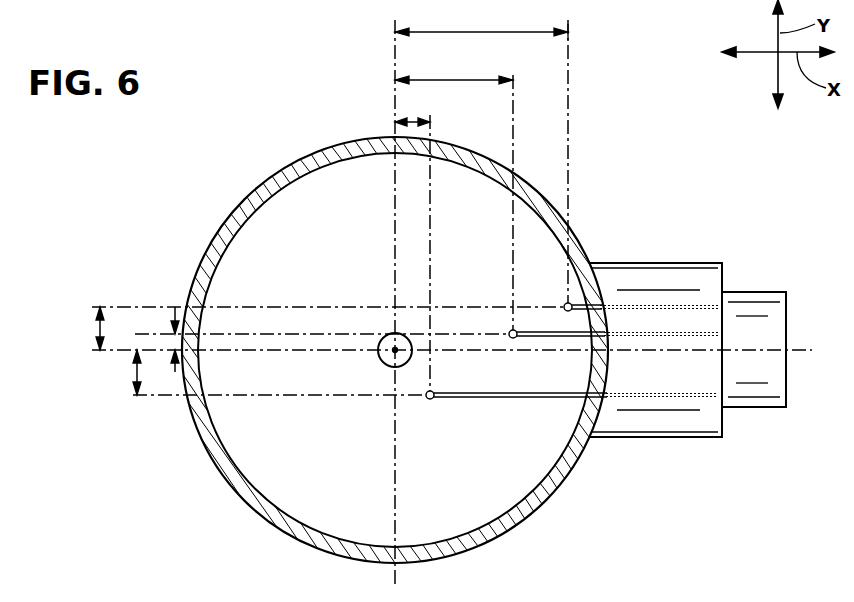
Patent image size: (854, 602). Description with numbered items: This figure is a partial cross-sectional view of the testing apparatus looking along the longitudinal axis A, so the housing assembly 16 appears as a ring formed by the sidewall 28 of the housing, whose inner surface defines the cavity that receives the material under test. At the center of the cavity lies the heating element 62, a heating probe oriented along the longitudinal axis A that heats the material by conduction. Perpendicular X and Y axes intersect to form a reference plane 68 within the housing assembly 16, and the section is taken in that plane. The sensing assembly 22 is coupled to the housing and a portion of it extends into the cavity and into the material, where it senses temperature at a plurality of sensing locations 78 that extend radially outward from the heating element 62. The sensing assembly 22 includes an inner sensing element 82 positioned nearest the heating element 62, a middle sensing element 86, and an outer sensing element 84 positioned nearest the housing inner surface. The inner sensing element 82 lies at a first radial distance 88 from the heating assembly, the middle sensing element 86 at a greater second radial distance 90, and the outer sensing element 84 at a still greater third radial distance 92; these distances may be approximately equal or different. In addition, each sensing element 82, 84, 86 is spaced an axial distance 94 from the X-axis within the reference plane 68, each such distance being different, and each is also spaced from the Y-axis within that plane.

The housing assembly 16 is at (250, 188).
The sensing assembly 22 is at (700, 263).
The sidewall 28 is at (570, 480).
The heating element 62 is at (382, 366).
The reference plane 68 is at (797, 350).
The sensing locations 78 is at (566, 303).
The inner sensing element 82 is at (432, 393).
The outer sensing element 84 is at (572, 304).
The middle sensing element 86 is at (512, 330).
The first radial distance 88 is at (412, 122).
The second radial distance 90 is at (428, 80).
The third radial distance 92 is at (455, 32).
The axial distance 94 is at (172, 325).
The longitudinal axis A is at (393, 348).